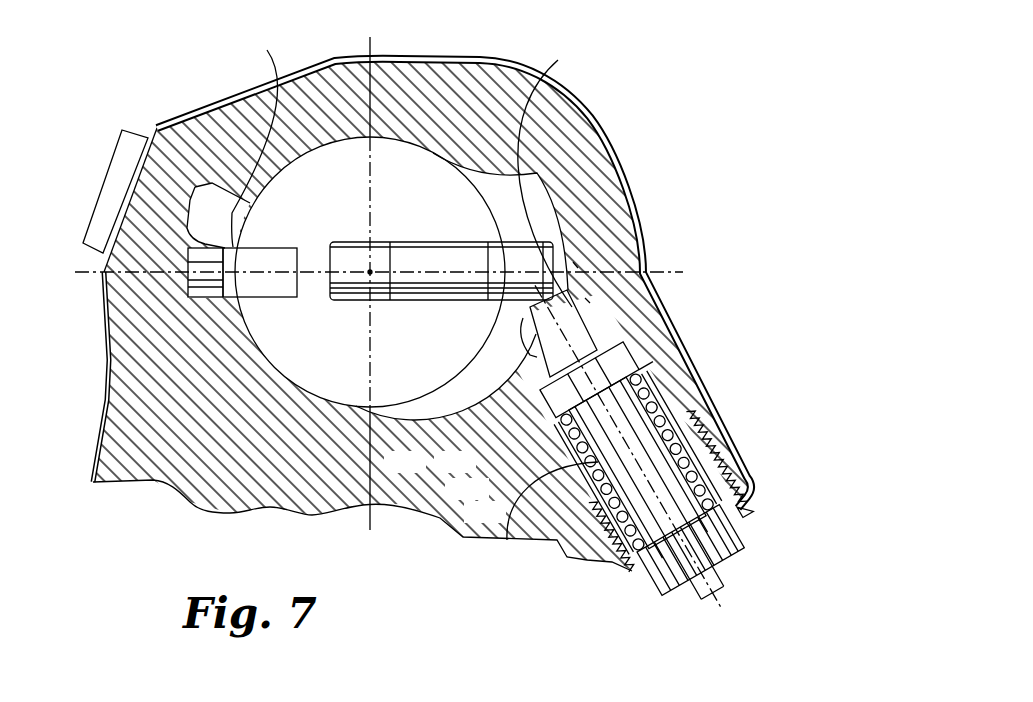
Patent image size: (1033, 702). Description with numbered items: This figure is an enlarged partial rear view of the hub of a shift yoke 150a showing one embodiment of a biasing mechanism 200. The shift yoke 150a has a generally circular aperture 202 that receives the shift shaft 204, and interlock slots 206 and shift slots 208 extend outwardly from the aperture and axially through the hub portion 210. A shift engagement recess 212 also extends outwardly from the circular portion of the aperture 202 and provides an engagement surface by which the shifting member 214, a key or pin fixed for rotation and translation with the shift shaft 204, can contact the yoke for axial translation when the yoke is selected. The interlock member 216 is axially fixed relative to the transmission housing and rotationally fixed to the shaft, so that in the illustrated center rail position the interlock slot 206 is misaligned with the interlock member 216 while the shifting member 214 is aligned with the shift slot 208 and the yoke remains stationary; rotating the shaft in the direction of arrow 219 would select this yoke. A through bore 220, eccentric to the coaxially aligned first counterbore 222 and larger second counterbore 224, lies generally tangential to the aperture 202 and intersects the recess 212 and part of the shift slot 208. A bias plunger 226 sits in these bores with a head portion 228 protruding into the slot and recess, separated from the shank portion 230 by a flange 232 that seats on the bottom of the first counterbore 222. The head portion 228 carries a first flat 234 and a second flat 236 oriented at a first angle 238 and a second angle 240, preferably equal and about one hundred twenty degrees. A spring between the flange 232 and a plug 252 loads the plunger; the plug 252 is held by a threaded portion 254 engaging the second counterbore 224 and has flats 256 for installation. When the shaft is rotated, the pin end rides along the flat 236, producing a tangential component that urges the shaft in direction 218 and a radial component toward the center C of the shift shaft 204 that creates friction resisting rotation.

The shift yoke 150a is at (453, 60).
The biasing mechanism 200 is at (757, 533).
The aperture 202 is at (242, 327).
The shift shaft 204 is at (342, 160).
The interlock slot 206 is at (213, 185).
The shift slot 208 is at (558, 60).
The hub portion 210 is at (598, 176).
The shift engagement recess 212 is at (443, 411).
The shifting member 214 is at (600, 198).
The interlock member 216 is at (249, 140).
The direction 218 is at (445, 268).
The arrow 219 is at (445, 276).
The through bore 220 is at (600, 318).
The first counterbore 222 is at (645, 390).
The second counterbore 224 is at (713, 463).
The bias plunger 226 is at (507, 545).
The head portion 228 is at (518, 353).
The shank portion 230 is at (635, 435).
The flange 232 is at (635, 360).
The first flat 234 is at (472, 363).
The second flat 236 is at (575, 262).
The first angle 238 is at (510, 512).
The second angle 240 is at (585, 298).
The plug 252 is at (727, 556).
The threaded portion 254 is at (603, 477).
The flats 256 is at (748, 520).
The center of shift shaft C is at (367, 277).